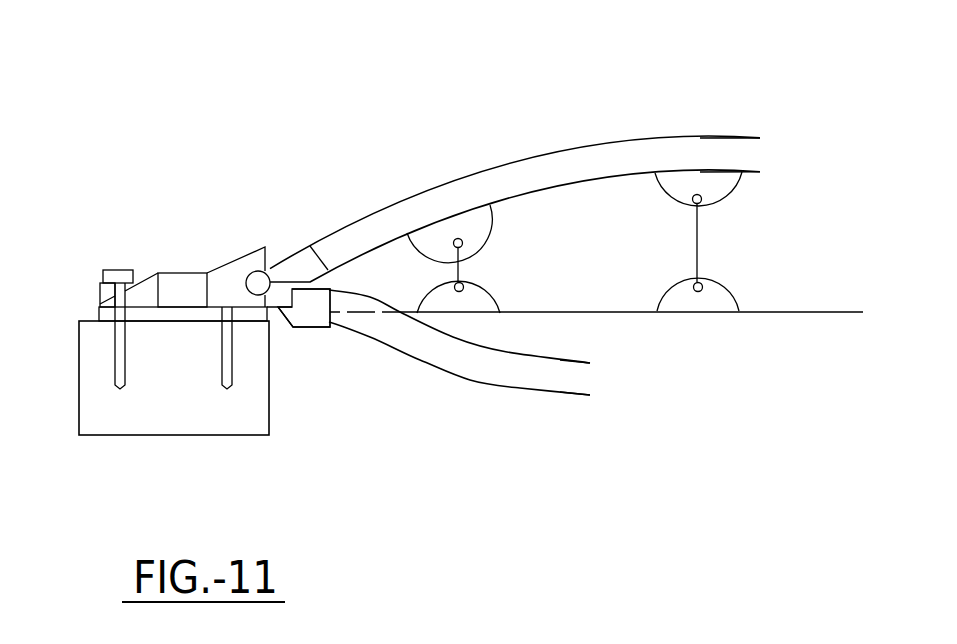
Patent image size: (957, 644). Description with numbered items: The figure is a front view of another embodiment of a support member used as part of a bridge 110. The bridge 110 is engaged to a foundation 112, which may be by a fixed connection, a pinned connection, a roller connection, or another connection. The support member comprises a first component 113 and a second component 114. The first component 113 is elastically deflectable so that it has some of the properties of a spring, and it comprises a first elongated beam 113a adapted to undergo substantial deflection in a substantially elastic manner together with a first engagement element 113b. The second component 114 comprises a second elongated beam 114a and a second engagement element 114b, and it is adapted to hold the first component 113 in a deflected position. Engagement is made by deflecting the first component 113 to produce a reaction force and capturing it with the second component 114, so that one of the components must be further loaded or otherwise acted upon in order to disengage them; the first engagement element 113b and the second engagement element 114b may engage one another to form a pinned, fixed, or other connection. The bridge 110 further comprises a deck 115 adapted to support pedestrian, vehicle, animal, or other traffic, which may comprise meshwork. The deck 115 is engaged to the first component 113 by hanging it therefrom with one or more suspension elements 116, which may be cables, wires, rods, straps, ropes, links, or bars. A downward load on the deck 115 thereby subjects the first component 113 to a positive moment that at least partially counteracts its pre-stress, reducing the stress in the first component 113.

The bridge 110 is at (403, 177).
The foundation 112 is at (205, 428).
The first component 113 is at (515, 170).
The first elongated beam 113a is at (609, 160).
The first engagement element 113b is at (287, 250).
The second component 114 is at (448, 372).
The second elongated beam 114a is at (530, 378).
The second engagement element 114b is at (238, 252).
The deck 115 is at (610, 317).
The suspension elements 116 is at (703, 226).